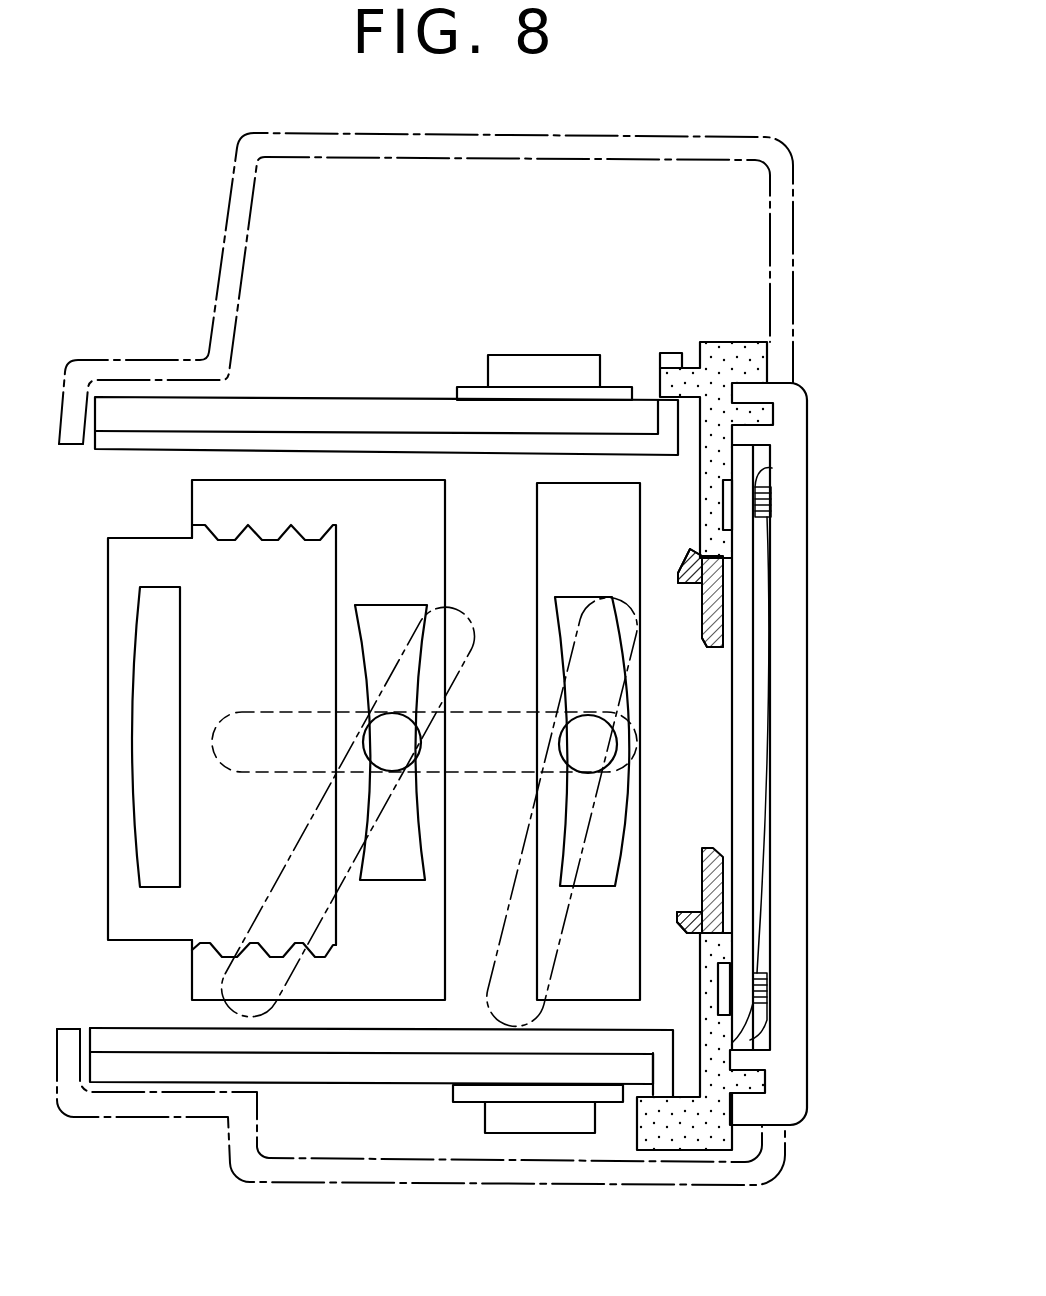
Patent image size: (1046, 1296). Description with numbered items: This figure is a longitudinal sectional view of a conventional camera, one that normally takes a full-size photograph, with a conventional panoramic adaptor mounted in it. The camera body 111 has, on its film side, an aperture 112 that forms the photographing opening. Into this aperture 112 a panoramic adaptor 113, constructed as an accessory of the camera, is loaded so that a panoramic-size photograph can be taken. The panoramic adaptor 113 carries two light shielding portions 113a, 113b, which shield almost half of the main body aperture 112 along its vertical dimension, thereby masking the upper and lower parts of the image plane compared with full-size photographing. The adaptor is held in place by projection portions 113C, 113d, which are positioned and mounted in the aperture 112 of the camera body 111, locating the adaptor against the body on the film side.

The camera body 111 is at (760, 365).
The aperture 112 is at (722, 548).
The panoramic adaptor 113 is at (716, 597).
The light shielding portion 113a is at (716, 628).
The light shielding portion 113b is at (716, 873).
The projection portion 113C is at (685, 557).
The projection portion 113d is at (716, 913).